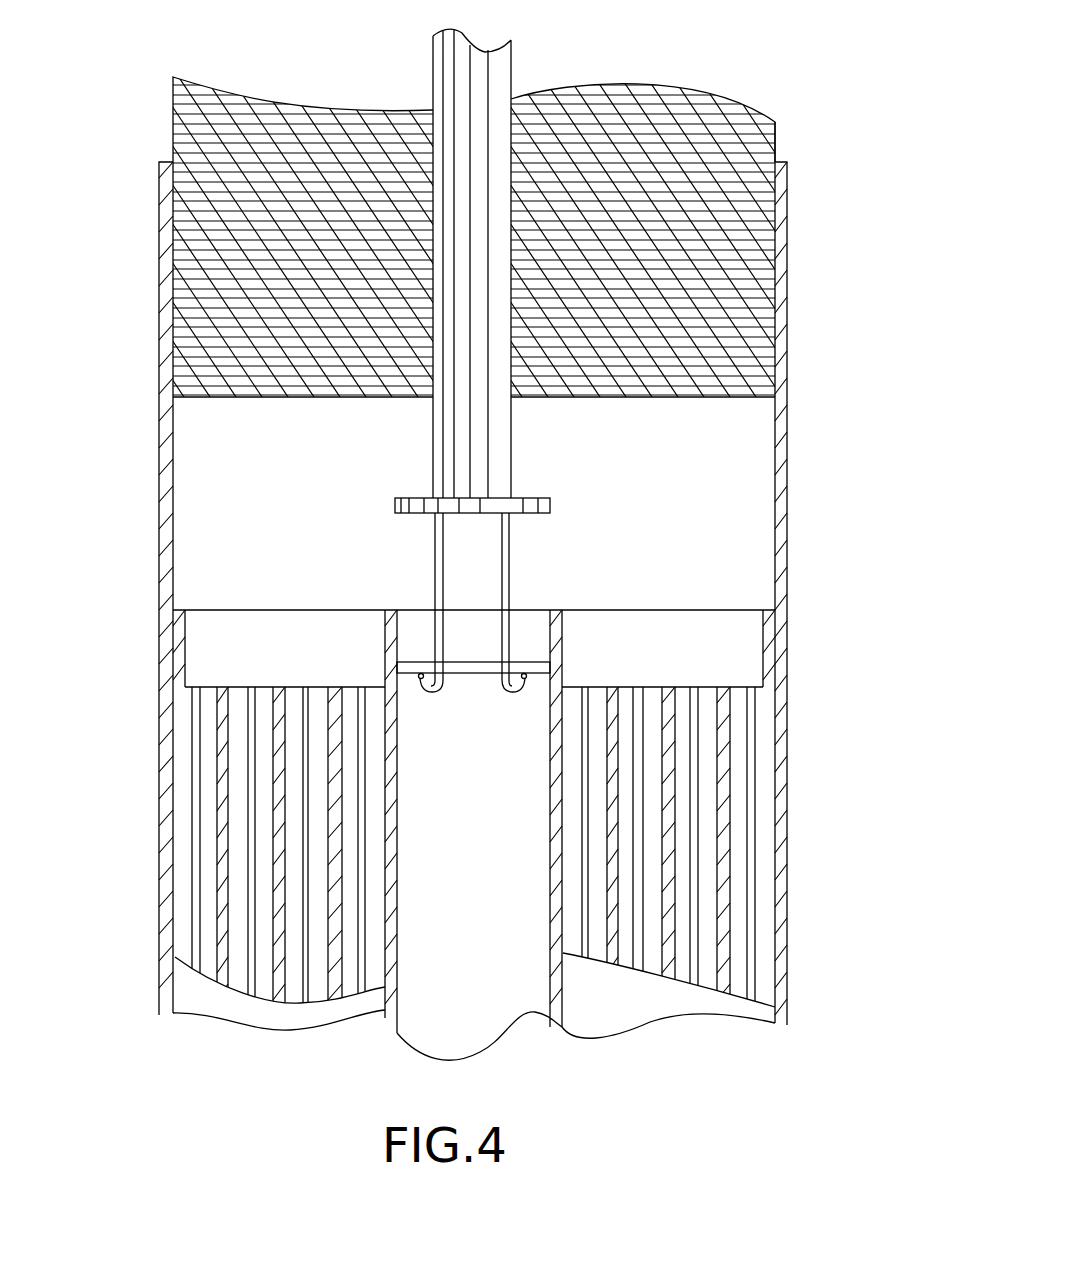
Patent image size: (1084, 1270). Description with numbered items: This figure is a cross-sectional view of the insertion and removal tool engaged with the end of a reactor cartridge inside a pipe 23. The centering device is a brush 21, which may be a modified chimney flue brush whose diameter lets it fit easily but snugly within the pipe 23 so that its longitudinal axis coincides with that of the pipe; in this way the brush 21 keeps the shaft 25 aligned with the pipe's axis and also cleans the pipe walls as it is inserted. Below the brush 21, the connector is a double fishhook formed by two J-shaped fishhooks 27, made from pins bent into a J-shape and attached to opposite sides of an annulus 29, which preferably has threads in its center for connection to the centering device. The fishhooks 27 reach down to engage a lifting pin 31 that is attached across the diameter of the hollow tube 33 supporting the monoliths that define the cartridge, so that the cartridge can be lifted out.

The brush 21 is at (677, 117).
The pipe 23 is at (787, 378).
The shaft 25 is at (487, 78).
The J-shaped fishhooks 27 is at (512, 567).
The annulus 29 is at (550, 502).
The lifting pin 31 is at (466, 677).
The tube 33 is at (550, 847).